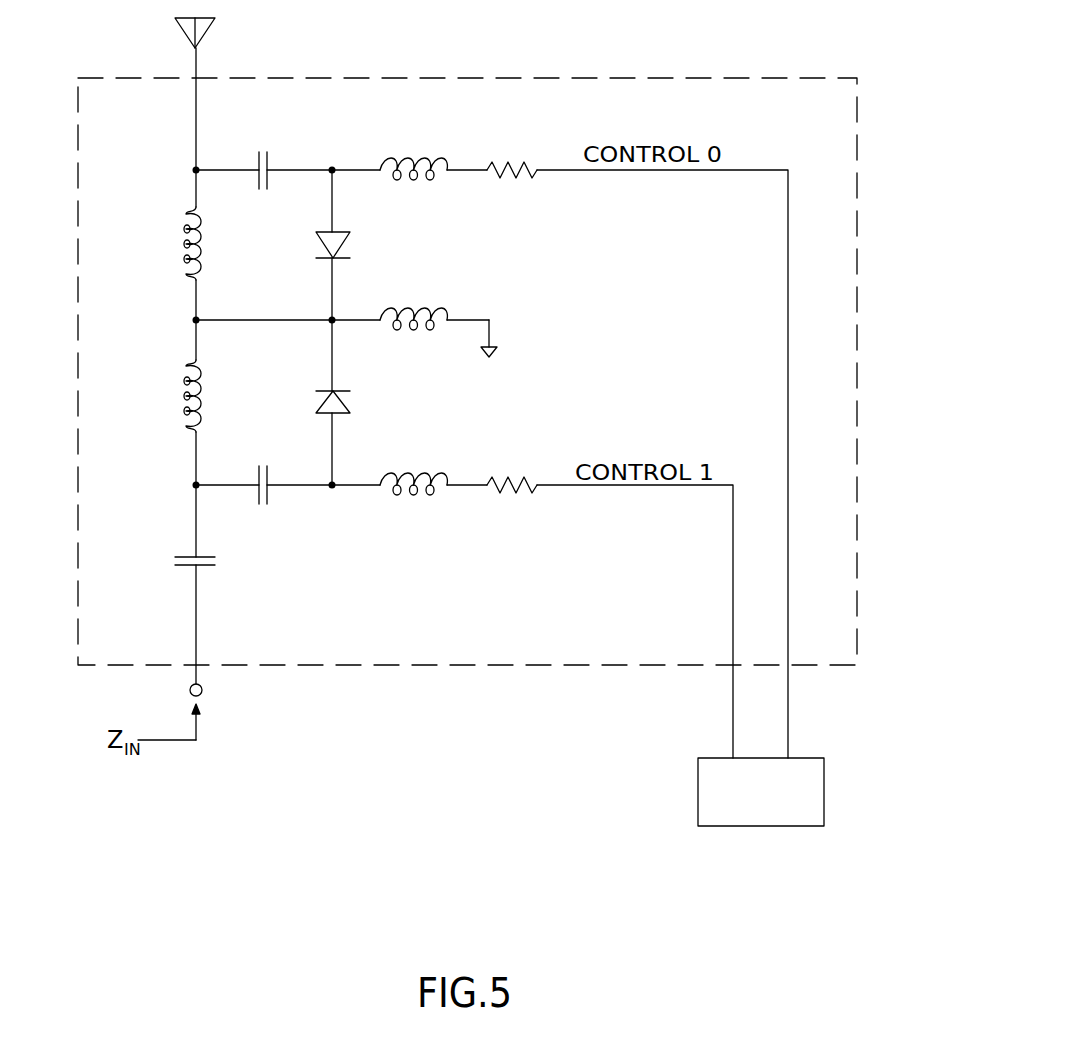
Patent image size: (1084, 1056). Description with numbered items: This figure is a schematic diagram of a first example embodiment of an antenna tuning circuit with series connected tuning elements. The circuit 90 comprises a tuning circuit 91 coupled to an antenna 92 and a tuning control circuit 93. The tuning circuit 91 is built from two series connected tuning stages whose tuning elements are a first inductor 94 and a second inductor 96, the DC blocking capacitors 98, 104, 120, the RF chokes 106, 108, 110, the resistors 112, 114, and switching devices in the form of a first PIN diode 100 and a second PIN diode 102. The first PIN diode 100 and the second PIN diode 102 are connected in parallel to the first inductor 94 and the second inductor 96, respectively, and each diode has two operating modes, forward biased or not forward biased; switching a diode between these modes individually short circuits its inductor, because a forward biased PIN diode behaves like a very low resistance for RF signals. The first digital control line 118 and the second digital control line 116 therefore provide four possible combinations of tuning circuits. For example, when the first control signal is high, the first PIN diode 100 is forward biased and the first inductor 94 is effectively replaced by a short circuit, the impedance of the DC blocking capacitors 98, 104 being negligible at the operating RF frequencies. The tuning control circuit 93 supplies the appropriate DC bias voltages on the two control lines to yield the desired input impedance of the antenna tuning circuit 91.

The circuit 90 is at (298, 748).
The tuning circuit 91 is at (355, 667).
The antenna 92 is at (216, 30).
The tuning control circuit 93 is at (825, 790).
The inductor L0 94 is at (183, 252).
The inductor L1 96 is at (183, 406).
The DC blocking capacitor C 98 is at (268, 168).
The PIN diode D0 100 is at (345, 233).
The PIN diode D1 102 is at (345, 403).
The DC blocking capacitor C 104 is at (268, 492).
The RF choke L 106 is at (432, 160).
The RF choke L 108 is at (435, 305).
The RF choke L 110 is at (413, 493).
The resistor R 112 is at (530, 172).
The resistor R 114 is at (505, 493).
The digital control line Control1 116 is at (733, 572).
The digital control line Control0 118 is at (788, 572).
The DC blocking capacitor C 120 is at (186, 567).